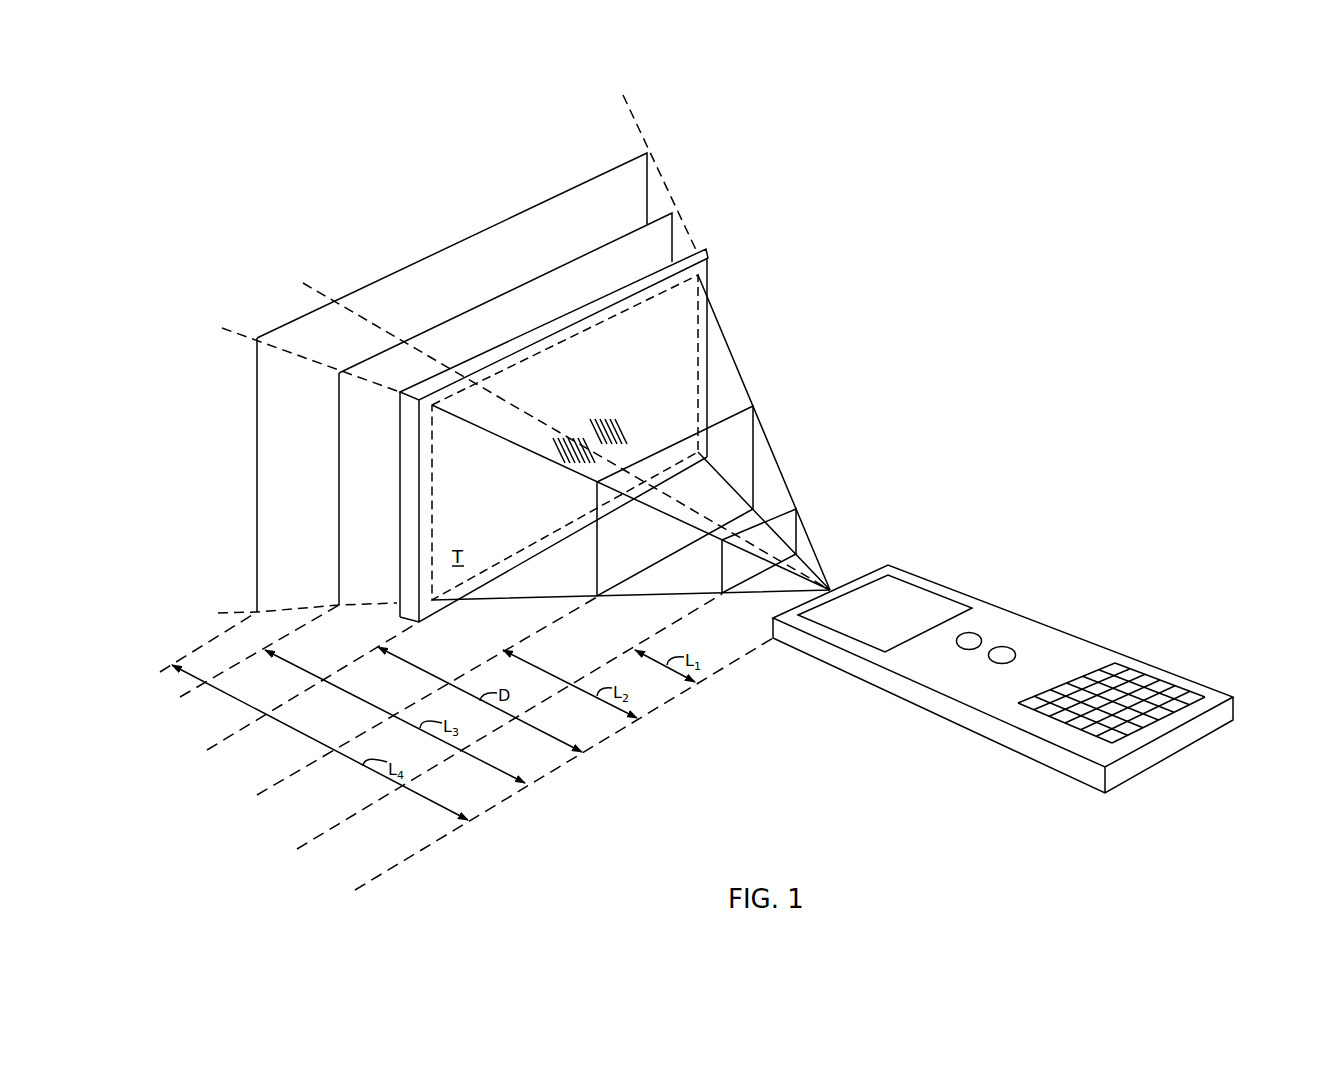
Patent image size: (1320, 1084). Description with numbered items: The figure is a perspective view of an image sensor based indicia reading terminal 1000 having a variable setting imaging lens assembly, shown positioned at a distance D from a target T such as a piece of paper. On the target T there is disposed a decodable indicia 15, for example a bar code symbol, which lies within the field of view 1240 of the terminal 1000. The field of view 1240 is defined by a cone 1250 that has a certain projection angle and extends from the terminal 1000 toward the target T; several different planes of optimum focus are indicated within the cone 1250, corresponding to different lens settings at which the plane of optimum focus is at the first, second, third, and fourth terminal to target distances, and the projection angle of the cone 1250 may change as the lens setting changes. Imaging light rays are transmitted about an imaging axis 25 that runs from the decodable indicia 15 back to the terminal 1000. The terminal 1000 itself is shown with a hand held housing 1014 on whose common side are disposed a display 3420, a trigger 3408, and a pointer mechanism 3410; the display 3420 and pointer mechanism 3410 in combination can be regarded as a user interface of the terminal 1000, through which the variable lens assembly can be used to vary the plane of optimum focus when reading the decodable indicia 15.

The imaging axis 25 is at (370, 325).
The field of view 1240 is at (700, 325).
The cone 1250 is at (739, 363).
The decodable indicia 15 is at (583, 467).
The indicia reading terminal 1000 is at (1022, 625).
The hand held housing 1014 is at (1182, 682).
The display 3420 is at (923, 586).
The trigger 3408 is at (977, 631).
The pointer mechanism 3410 is at (1011, 646).